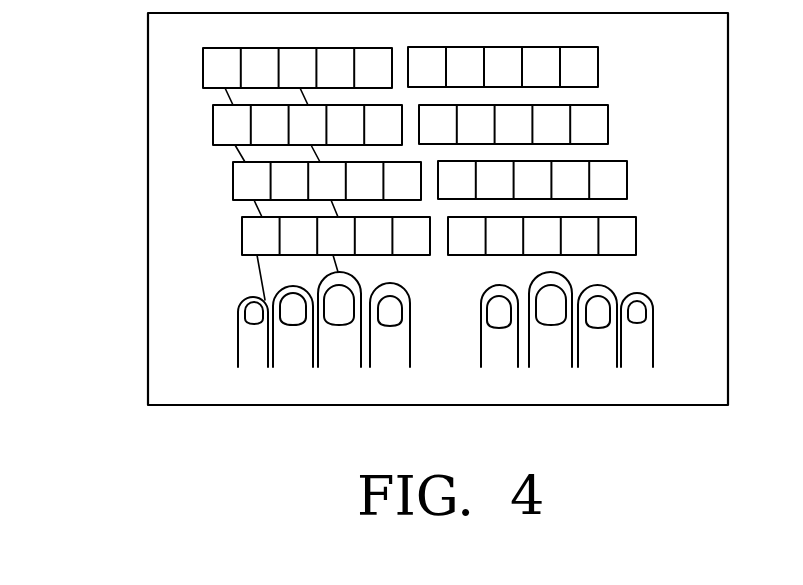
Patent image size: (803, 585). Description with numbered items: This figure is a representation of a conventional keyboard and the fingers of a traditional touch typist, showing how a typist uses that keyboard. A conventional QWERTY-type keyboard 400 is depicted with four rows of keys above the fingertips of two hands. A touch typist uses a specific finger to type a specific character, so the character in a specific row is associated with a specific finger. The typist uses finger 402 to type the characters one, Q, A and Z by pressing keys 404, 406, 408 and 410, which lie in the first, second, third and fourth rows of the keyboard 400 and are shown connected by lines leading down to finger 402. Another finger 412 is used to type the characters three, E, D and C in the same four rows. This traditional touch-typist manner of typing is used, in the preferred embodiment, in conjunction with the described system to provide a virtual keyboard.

The virtual keyboard display 400 is at (631, 110).
The finger 402 is at (411, 321).
The key 404 is at (203, 65).
The key 406 is at (213, 118).
The key 408 is at (233, 185).
The key 410 is at (242, 232).
The finger 412 is at (350, 287).